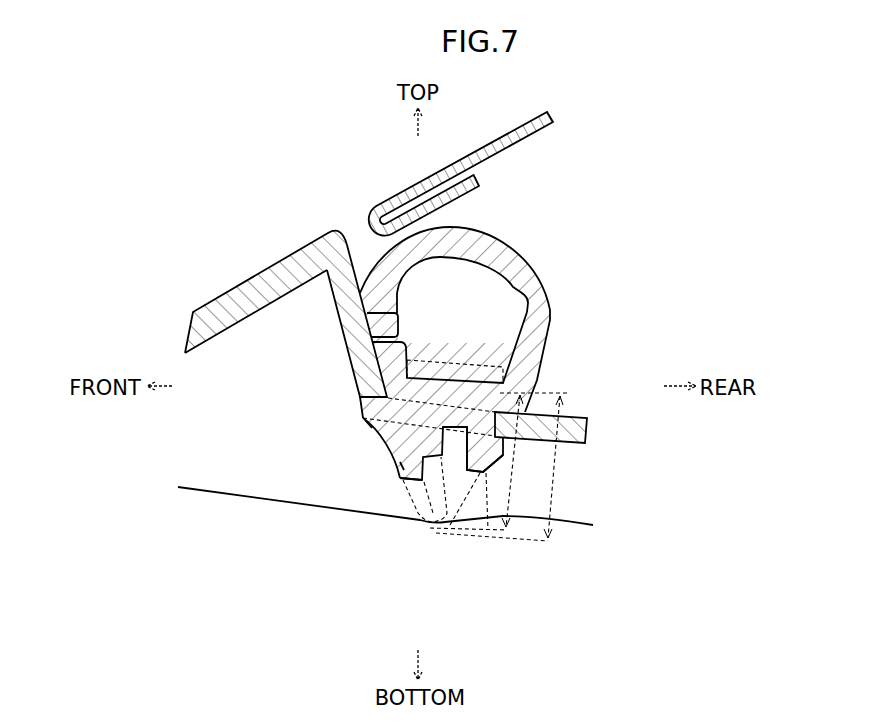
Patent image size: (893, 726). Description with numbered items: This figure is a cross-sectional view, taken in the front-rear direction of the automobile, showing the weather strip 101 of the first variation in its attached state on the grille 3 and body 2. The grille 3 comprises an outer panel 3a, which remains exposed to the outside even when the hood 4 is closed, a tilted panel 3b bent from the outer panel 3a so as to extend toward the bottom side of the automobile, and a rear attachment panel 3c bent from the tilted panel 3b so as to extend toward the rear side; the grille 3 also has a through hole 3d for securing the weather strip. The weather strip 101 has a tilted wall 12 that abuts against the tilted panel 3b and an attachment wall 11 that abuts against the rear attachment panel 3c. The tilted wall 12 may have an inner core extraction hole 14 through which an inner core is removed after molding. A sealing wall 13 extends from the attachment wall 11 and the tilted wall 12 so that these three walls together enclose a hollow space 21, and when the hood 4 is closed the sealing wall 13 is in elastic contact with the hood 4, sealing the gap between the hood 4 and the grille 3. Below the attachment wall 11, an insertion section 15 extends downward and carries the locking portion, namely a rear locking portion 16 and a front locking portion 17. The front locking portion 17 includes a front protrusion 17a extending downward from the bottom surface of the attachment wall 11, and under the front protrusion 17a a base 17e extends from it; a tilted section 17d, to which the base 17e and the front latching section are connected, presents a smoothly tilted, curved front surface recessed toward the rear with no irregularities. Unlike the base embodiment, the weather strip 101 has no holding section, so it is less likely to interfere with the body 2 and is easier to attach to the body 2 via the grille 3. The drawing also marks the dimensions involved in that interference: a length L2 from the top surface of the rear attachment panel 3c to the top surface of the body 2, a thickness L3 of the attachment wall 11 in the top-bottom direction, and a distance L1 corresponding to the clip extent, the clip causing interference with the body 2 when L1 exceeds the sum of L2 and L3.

The body 2 is at (262, 499).
The grille 3 is at (278, 250).
The outer panel 3a is at (262, 289).
The tilted panel 3b is at (347, 323).
The rear attachment panel 3c is at (572, 417).
The through hole 3d is at (363, 417).
The hood 4 is at (411, 187).
The attachment wall 11 is at (490, 385).
The tilted wall 12 is at (358, 388).
The sealing wall 13 is at (545, 310).
The inner core extraction hole 14 is at (390, 359).
The insertion section 15 is at (335, 484).
The rear locking portion 16 is at (488, 530).
The front locking portion 17 is at (379, 440).
The front protrusion 17a is at (448, 530).
The tilted section 17d is at (368, 428).
The base 17e is at (402, 485).
The hollow space 21 is at (458, 270).
The weather strip 101 is at (562, 258).
The distance from bottom surface of clip head to bottom end of clip leg L1 is at (510, 468).
The length from top surface of rear attachment panel to top surface of body L2 is at (485, 462).
The thickness of attachment wall L3 is at (528, 398).